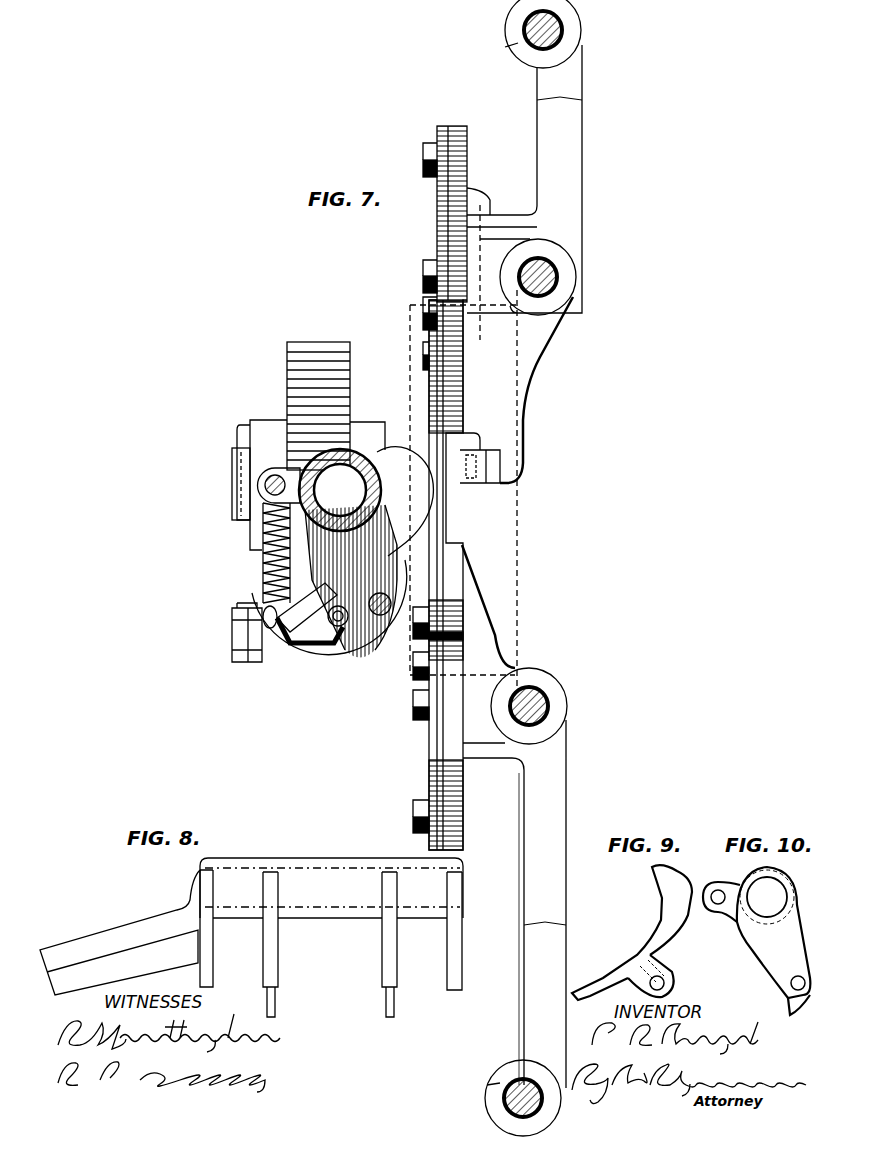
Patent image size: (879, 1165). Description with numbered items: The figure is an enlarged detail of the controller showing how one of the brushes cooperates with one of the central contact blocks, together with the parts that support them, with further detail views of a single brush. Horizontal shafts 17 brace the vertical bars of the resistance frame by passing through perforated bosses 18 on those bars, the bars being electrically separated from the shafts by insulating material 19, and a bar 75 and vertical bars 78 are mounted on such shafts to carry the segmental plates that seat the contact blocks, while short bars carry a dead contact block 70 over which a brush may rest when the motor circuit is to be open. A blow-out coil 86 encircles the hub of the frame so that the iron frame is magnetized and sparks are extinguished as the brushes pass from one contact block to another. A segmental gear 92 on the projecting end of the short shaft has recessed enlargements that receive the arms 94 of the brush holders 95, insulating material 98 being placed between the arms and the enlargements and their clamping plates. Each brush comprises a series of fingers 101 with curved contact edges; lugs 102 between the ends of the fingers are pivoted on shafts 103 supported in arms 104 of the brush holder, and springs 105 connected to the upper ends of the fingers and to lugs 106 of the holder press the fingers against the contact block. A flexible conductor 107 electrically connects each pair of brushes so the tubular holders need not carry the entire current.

In FIG. 7, the horizontal shafts 17 is at (562, 31).
In FIG. 7, the perforated bosses 18 is at (488, 568).
In FIG. 7, the insulating material 19 is at (537, 692).
In FIG. 7, the dead contact block 70 is at (449, 503).
In FIG. 7, the bar 75 is at (558, 800).
In FIG. 7, the vertical bars 78 is at (572, 180).
In FIG. 7, the blow-out coil 86 is at (410, 672).
In FIG. 7, the segmental gear 92 is at (318, 394).
In FIG. 7, the arms 94 is at (308, 650).
In FIG. 8, the arms 94 is at (128, 932).
In FIG. 7, the brush holders 95 is at (378, 460).
In FIG. 8, the brush holders 95 is at (328, 866).
In FIG. 7, the insulating material 98 is at (250, 668).
In FIG. 7, the fingers 101 is at (420, 445).
In FIG. 9, the fingers 101 is at (632, 932).
In FIG. 7, the lugs 102 is at (332, 582).
In FIG. 9, the lugs 102 is at (664, 974).
In FIG. 7, the shafts 103 is at (387, 593).
In FIG. 7, the arms 104 is at (373, 542).
In FIG. 10, the arms 104 is at (756, 941).
In FIG. 7, the springs 105 is at (268, 565).
In FIG. 7, the lugs 106 is at (275, 474).
In FIG. 7, the flexible conductor 107 is at (338, 630).